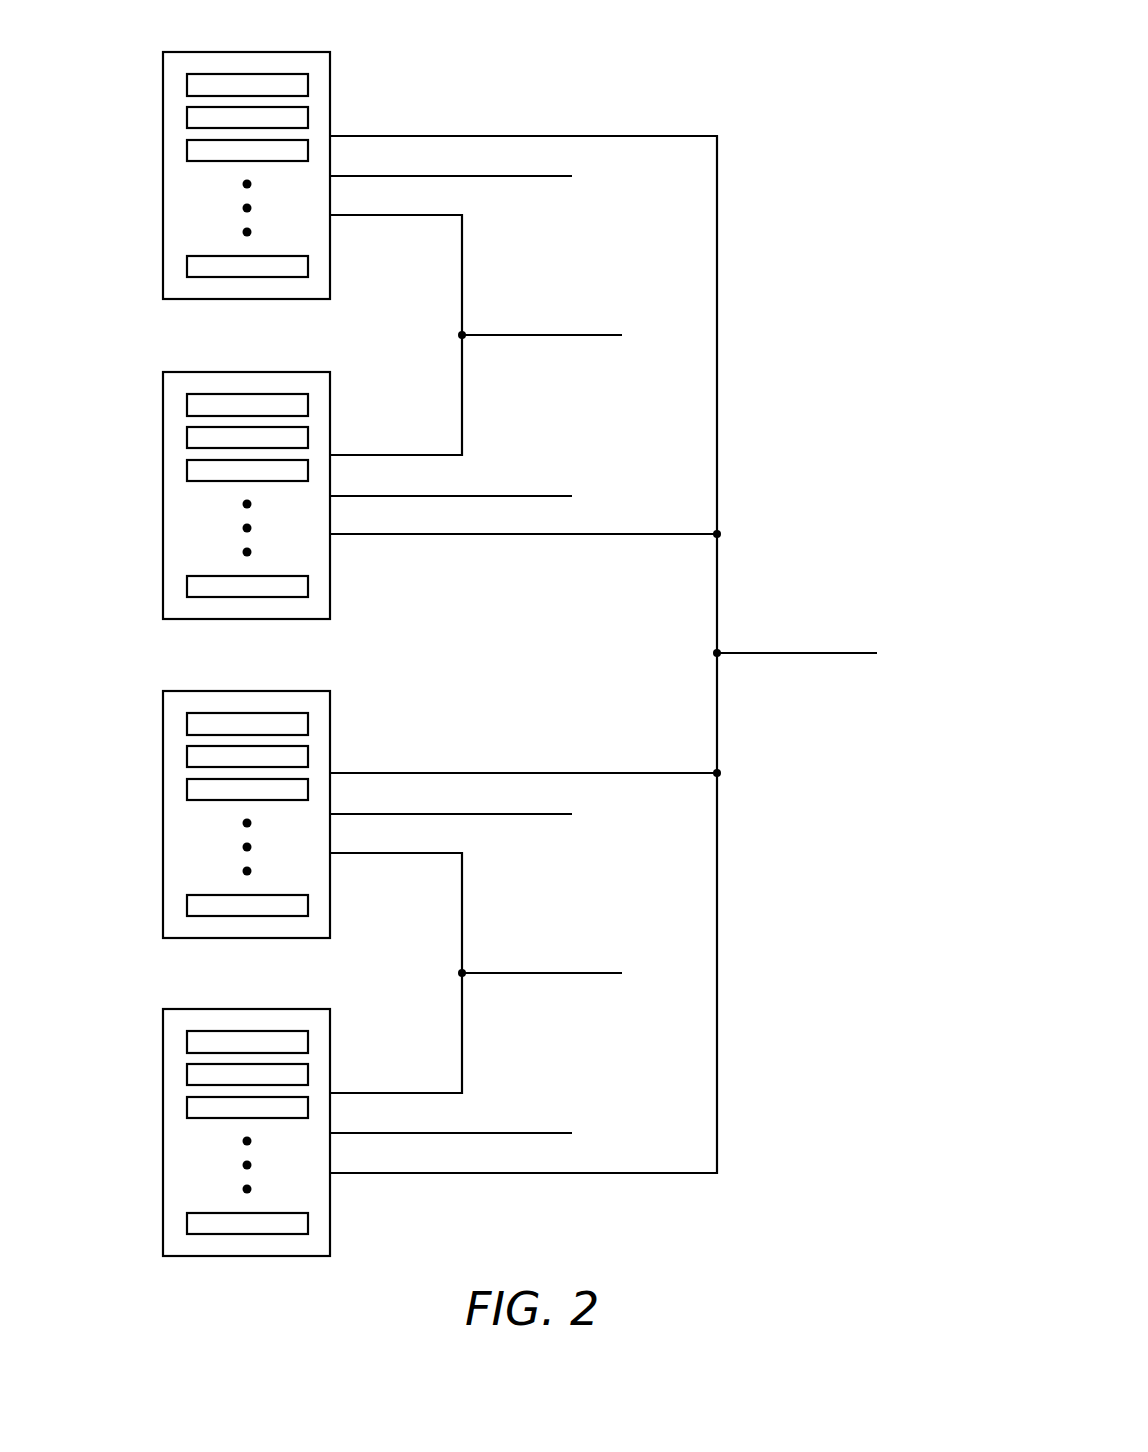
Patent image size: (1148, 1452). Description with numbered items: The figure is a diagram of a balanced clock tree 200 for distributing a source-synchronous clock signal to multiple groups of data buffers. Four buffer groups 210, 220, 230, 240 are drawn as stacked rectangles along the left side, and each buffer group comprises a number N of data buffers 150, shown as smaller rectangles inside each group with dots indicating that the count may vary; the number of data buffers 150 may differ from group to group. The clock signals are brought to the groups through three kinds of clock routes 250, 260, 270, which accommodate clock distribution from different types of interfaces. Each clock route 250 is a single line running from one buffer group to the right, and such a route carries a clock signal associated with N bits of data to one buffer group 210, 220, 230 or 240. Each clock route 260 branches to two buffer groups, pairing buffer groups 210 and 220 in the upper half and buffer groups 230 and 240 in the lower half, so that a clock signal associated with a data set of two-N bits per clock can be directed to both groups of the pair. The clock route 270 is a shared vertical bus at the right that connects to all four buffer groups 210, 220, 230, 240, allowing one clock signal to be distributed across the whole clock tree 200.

The balanced clock tree 200 is at (735, 64).
The buffer group 210 is at (307, 52).
The buffer group 220 is at (307, 372).
The buffer group 230 is at (307, 691).
The buffer group 240 is at (307, 1009).
The data buffer 150 is at (187, 83).
The clock route 250 is at (567, 173).
The clock route 260 is at (600, 332).
The clock route 270 is at (850, 652).